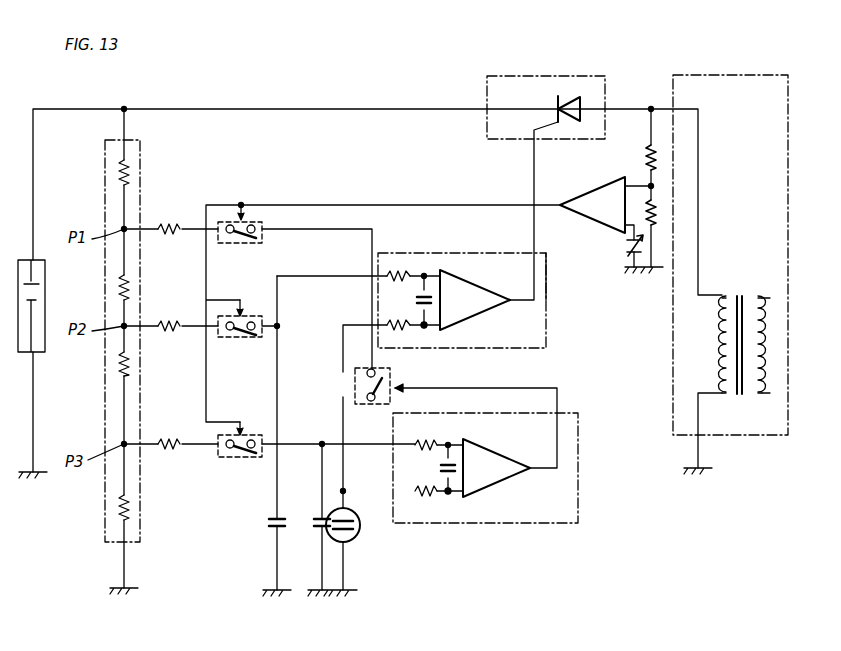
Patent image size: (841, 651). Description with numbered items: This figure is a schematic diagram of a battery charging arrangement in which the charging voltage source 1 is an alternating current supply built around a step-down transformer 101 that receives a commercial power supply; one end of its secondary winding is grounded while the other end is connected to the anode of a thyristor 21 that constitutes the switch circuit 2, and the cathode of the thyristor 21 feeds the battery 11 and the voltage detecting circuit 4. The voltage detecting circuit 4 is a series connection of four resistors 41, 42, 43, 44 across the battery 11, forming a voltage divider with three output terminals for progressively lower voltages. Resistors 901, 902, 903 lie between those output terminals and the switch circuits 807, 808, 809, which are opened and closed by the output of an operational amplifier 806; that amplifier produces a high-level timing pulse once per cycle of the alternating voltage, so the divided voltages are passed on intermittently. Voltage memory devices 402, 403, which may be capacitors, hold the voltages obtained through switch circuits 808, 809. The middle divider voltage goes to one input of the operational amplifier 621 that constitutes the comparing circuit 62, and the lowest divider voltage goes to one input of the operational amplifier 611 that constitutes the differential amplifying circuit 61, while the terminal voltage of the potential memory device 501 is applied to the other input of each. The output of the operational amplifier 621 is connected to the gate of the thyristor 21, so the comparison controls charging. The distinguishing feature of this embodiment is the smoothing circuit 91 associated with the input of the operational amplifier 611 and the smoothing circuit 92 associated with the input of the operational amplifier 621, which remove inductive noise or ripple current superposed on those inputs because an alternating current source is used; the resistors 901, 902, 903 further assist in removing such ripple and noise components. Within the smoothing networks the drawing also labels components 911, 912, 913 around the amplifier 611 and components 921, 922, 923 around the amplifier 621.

The charging voltage source 1 is at (730, 233).
The switch circuit 2 is at (546, 90).
The voltage detecting circuit 4 is at (142, 140).
The battery 11 is at (38, 352).
The thyristor 21 is at (577, 103).
The resistor 41 is at (108, 172).
The resistor 42 is at (108, 288).
The resistor 43 is at (108, 364).
The resistor 44 is at (108, 508).
The differential amplifying circuit 61 is at (514, 468).
The comparing circuit 62 is at (495, 290).
The smoothing circuit 91 is at (435, 470).
The smoothing circuit 92 is at (413, 301).
The step-down transformer 101 is at (738, 297).
The voltage memory device 402 is at (276, 529).
The voltage memory device 403 is at (321, 529).
The potential memory device 501 is at (362, 536).
The operational amplifier 611 is at (490, 487).
The operational amplifier 621 is at (484, 314).
The operational amplifier 806 is at (577, 222).
The switch circuit 807 is at (236, 245).
The switch circuit 808 is at (233, 340).
The switch circuit 809 is at (233, 459).
The resistor 901 is at (172, 226).
The resistor 902 is at (172, 323).
The resistor 903 is at (169, 441).
The resistor 911 is at (421, 493).
The junction 912 is at (450, 494).
The resistor 913 is at (432, 442).
The resistor 921 is at (398, 322).
The junction 922 is at (430, 328).
The resistor 923 is at (402, 272).